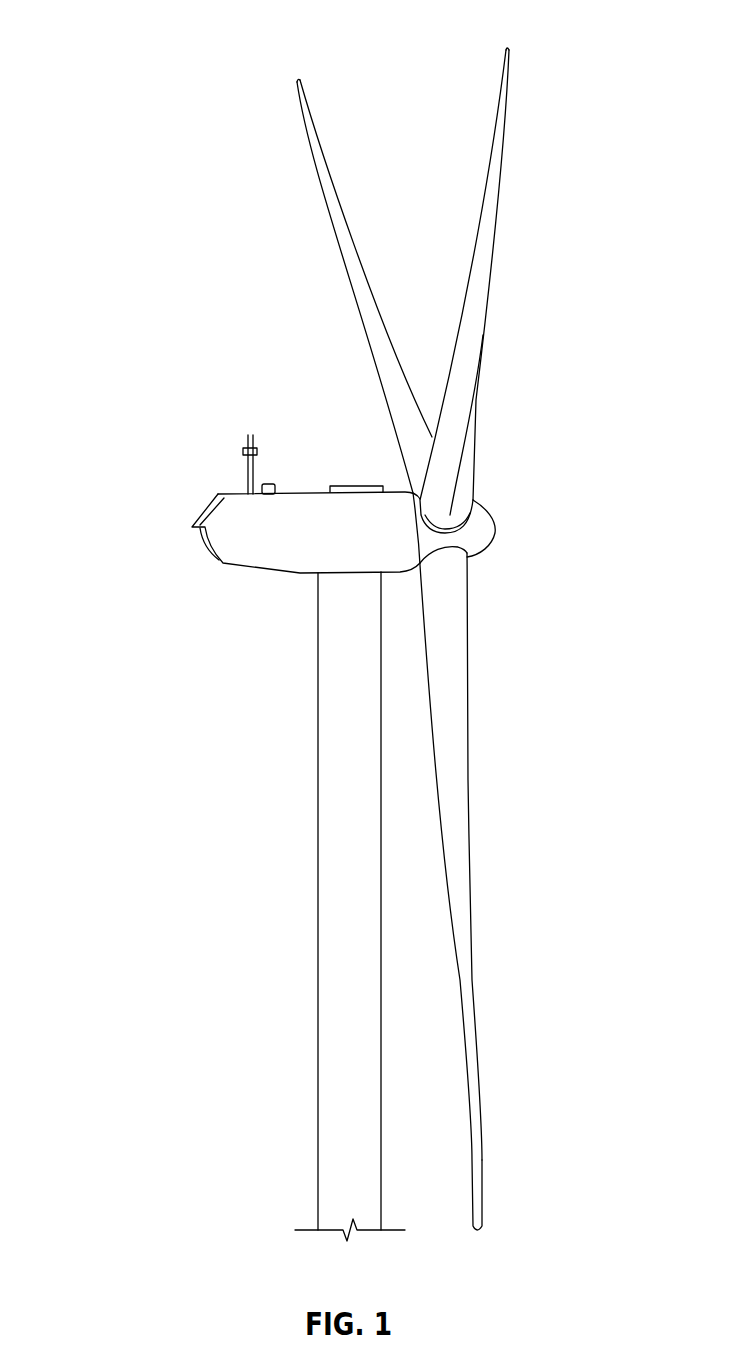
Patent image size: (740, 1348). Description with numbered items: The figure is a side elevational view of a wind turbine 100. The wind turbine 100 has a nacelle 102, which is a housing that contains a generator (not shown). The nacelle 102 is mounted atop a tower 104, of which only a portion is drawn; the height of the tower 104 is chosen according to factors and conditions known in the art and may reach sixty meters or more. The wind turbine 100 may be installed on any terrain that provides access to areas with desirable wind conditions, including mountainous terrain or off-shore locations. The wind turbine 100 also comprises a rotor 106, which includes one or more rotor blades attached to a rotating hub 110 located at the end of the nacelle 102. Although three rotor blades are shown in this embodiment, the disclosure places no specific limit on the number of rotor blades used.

The wind turbine 100 is at (147, 56).
The nacelle 102 is at (240, 570).
The tower 104 is at (318, 838).
The rotor 106 is at (472, 639).
The rotating hub 110 is at (497, 530).